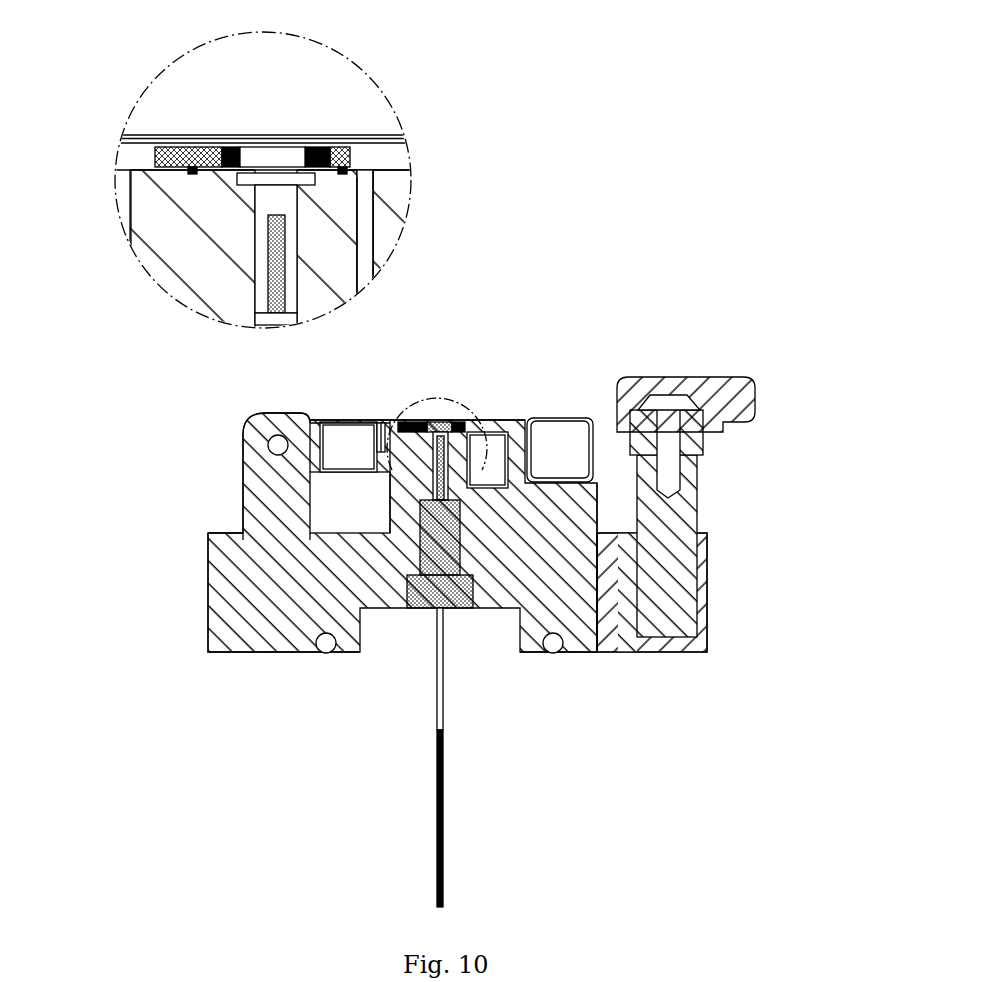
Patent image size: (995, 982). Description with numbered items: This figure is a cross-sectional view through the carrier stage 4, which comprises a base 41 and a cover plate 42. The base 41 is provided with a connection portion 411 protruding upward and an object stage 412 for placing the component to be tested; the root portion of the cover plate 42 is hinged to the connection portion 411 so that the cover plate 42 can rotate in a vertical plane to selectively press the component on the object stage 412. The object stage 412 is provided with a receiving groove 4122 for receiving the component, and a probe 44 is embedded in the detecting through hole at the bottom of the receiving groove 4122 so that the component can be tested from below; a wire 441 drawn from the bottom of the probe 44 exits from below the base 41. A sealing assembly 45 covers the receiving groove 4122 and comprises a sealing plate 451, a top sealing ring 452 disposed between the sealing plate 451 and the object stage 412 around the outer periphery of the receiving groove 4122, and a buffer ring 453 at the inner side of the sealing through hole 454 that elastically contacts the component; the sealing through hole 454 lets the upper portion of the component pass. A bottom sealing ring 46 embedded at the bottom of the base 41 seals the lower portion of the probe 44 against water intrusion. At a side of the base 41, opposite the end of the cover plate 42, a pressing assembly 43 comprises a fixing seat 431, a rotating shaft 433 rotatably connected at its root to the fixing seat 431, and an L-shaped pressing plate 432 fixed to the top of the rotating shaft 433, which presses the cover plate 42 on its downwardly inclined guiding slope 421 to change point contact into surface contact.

The carrier stage 4 is at (614, 229).
The base 41 is at (205, 603).
The connection portion 411 is at (243, 505).
The object stage 412 is at (400, 473).
The receiving groove 4122 is at (430, 383).
The cover plate 42 is at (367, 418).
The guiding slope 421 is at (543, 418).
The pressing assembly 43 is at (725, 490).
The fixing seat 431 is at (707, 627).
The pressing plate 432 is at (752, 403).
The rotating shaft 433 is at (690, 470).
The probe 44 is at (467, 613).
The needle 441 is at (437, 728).
The sealing assembly 45 is at (460, 420).
The sealing plate 451 is at (153, 152).
The top sealing ring 452 is at (363, 168).
The buffer ring 453 is at (230, 143).
The sealing through hole 454 is at (290, 146).
The bottom sealing ring 46 is at (322, 652).